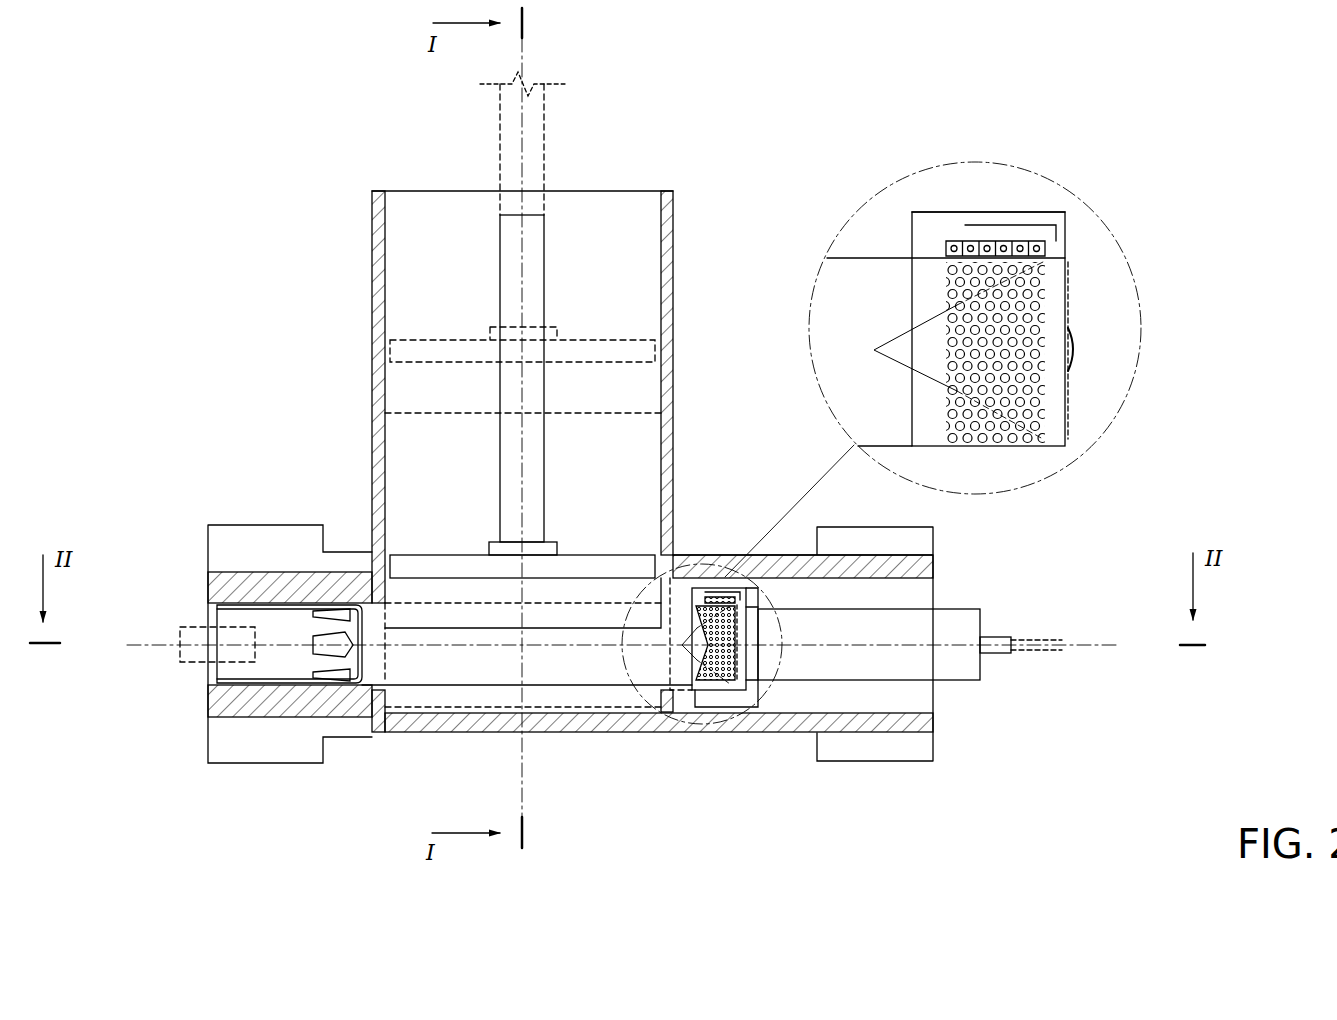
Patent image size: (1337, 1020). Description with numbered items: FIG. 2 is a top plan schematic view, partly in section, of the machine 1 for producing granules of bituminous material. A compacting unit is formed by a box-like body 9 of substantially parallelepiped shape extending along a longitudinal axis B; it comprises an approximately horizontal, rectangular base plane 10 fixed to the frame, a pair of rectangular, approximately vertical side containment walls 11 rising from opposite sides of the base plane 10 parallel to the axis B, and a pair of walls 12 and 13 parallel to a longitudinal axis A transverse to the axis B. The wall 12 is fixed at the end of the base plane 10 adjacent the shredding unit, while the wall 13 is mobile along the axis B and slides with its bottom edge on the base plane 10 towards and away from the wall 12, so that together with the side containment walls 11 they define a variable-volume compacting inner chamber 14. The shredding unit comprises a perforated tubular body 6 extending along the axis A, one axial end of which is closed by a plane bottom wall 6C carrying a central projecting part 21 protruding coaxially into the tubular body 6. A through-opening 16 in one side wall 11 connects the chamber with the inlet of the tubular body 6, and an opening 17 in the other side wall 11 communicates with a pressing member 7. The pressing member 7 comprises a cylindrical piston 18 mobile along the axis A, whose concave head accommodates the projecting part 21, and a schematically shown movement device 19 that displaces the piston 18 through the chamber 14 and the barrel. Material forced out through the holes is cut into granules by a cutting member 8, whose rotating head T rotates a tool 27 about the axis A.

The fluid control device 1 is at (183, 179).
The perforated tubular body 6 is at (722, 700).
The bottom wall 6C is at (1070, 295).
The pressing member 7 is at (193, 618).
The cutting member 8 is at (717, 577).
The box-like body 9 is at (610, 191).
The base plane 10 is at (410, 487).
The side containment walls 11 is at (372, 355).
The fixed wall 12 is at (575, 695).
The mobile wall 13 is at (625, 565).
The compacting inner chamber 14 is at (497, 672).
The through-opening 16 is at (662, 668).
The opening 17 is at (383, 660).
The piston 18 is at (266, 686).
The movement device 19 is at (190, 662).
The projecting part 21 is at (685, 657).
The tool 27 is at (1058, 247).
The longitudinal axis A is at (133, 645).
The longitudinal axis B is at (522, 133).
The rotating head T is at (971, 209).